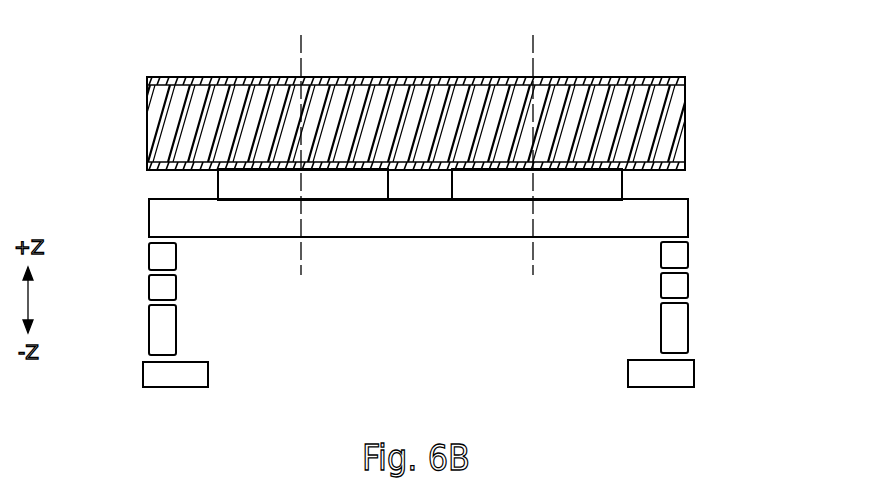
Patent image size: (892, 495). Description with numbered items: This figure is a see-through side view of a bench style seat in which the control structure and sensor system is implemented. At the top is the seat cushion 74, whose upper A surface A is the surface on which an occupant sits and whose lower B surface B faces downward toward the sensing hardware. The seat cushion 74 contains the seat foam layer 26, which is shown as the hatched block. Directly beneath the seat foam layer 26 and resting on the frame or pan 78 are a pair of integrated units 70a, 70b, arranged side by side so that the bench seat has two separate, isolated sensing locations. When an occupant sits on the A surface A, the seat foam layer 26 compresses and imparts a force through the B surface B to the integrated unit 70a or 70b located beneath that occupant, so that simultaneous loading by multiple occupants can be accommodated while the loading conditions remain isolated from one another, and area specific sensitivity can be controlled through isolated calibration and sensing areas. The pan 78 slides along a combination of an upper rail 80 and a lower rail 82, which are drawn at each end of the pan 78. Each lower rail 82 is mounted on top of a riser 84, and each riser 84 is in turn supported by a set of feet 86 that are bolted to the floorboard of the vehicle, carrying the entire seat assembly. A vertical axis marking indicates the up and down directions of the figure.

The seat cushion 74 is at (705, 65).
The seat foam layer 26 is at (655, 126).
The A surface A is at (178, 77).
The B surface B is at (168, 184).
The integrated unit 70a is at (216, 174).
The integrated unit 70b is at (622, 181).
The pan 78 is at (688, 219).
The upper rail 80 is at (149, 251).
The lower rail 82 is at (149, 289).
The riser 84 is at (149, 328).
The feet 86 is at (143, 372).